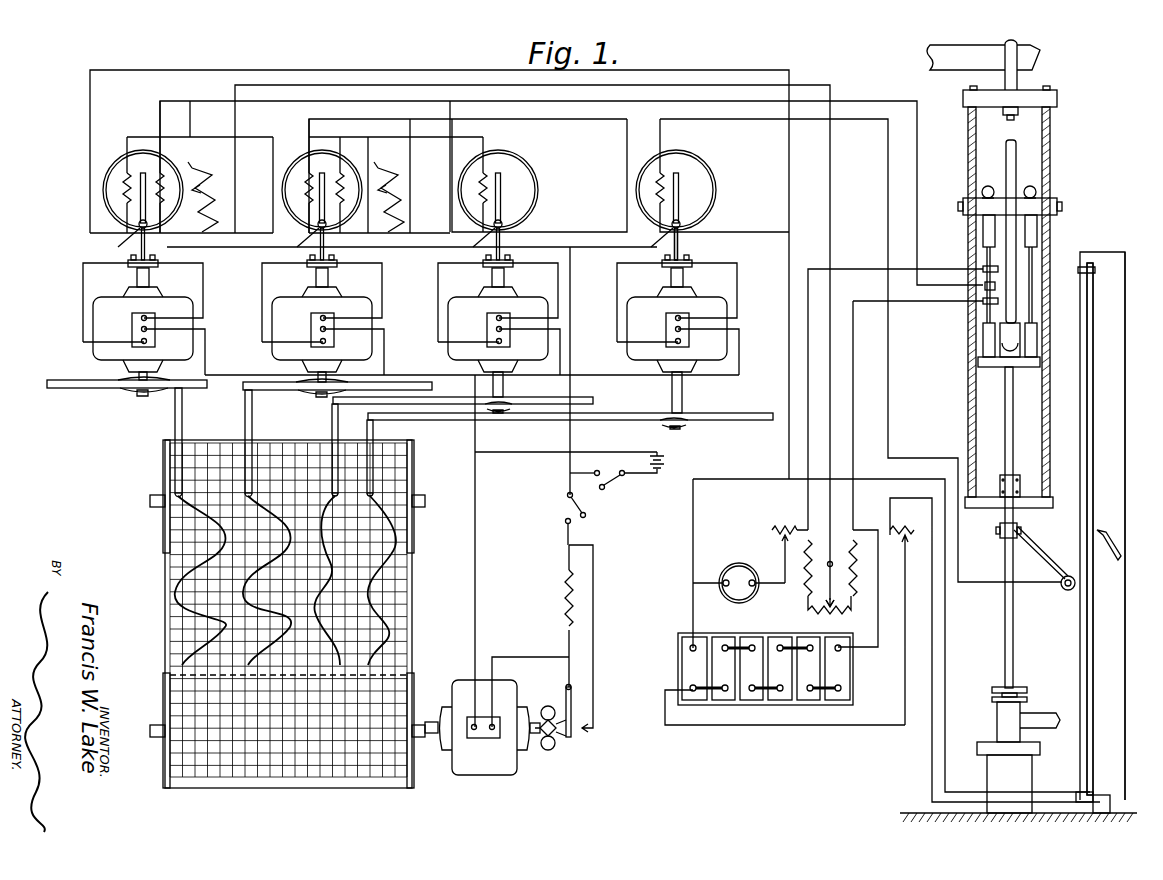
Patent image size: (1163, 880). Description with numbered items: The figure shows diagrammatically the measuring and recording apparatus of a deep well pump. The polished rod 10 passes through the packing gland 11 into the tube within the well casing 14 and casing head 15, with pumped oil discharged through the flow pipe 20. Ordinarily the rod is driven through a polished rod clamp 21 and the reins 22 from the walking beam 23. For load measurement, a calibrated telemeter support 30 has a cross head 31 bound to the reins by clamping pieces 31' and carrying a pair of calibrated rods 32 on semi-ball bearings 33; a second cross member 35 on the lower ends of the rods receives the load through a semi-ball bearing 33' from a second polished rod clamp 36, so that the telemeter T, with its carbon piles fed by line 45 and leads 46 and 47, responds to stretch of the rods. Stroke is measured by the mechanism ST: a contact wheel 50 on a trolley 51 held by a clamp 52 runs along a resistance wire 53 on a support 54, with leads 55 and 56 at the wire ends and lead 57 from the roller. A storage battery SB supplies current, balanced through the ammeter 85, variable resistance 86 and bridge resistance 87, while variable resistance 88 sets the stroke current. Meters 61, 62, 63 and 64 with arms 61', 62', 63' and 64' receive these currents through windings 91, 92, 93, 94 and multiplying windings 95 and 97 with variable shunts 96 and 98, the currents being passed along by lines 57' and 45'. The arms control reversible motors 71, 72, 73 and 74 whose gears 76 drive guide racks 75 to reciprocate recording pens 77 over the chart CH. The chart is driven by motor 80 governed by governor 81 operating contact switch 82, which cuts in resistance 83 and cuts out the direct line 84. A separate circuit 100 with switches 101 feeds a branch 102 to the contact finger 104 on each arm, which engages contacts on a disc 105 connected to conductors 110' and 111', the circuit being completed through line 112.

The polished rod 10 is at (1005, 414).
The stuffing box or packing gland 11 is at (992, 690).
The well casing 14 is at (987, 767).
The casing head 15 is at (980, 745).
The flow pipe 20 is at (1040, 716).
The polished rod clamp 21 is at (1010, 482).
The reins 22 is at (1050, 146).
The walking beam 23 is at (983, 57).
The calibrated telemeter support 30 is at (1038, 254).
The cross head 31 is at (1030, 195).
The clamping pieces 31' is at (1031, 207).
The calibrated rods 32 is at (983, 327).
The semi-ball bearings 33 is at (1039, 176).
The semi-ball bearing 33' is at (1042, 345).
The second cross member 35 is at (990, 368).
The second polished rod clamp 36 is at (1003, 340).
The line 45 is at (571, 287).
The line 45' is at (408, 164).
The line 46 is at (808, 385).
The line 47 is at (955, 301).
The contact wheel 50 is at (1066, 590).
The trolley 51 is at (1046, 563).
The clamp 52 is at (1020, 527).
The resistance wire 53 is at (1094, 360).
The support 54 is at (1100, 655).
The lead 55 is at (293, 60).
The lead 56 is at (1125, 420).
The lead 57 is at (861, 350).
The line 57' is at (599, 129).
The electric meter 61 is at (712, 175).
The meter arm 61' is at (705, 216).
The electric meter 62 is at (539, 175).
The meter arm 62' is at (526, 216).
The electric meter 63 is at (382, 167).
The meter arm 63' is at (285, 216).
The electric meter 64 is at (158, 167).
The meter arm 64' is at (93, 216).
The reversible motor 71 is at (678, 338).
The reversible motor 72 is at (499, 330).
The reversible motor 73 is at (323, 322).
The reversible motor 74 is at (144, 321).
The guide racks 75 is at (72, 364).
The gears 76 is at (124, 395).
The recording pens 77 is at (175, 496).
The motor 80 is at (482, 727).
The governor 81 is at (553, 749).
The contact switch 82 is at (583, 727).
The resistance 83 is at (565, 600).
The direct line 84 is at (594, 620).
The ammeter 85 is at (735, 566).
The variable resistance 86 is at (782, 527).
The variable resistance 87 is at (808, 610).
The variable resistance 88 is at (882, 650).
The winding 91 is at (665, 180).
The winding 92 is at (487, 180).
The winding 93 is at (305, 172).
The winding 94 is at (127, 185).
The winding 95 is at (343, 172).
The variable shunt 96 is at (388, 186).
The multiplying winding 97 is at (160, 173).
The variable shunt 98 is at (200, 186).
The separate circuit 100 is at (652, 455).
The switches 101 is at (590, 504).
The branch 102 is at (598, 240).
The contact finger 104 is at (683, 256).
The disc 105 is at (692, 272).
The conductor 110' is at (597, 291).
The conductor 111' is at (755, 289).
The line 112 is at (572, 373).
The telemeter T is at (976, 258).
The stroke-measuring mechanism ST is at (1106, 256).
The storage battery SB is at (765, 669).
The chart CH is at (166, 762).